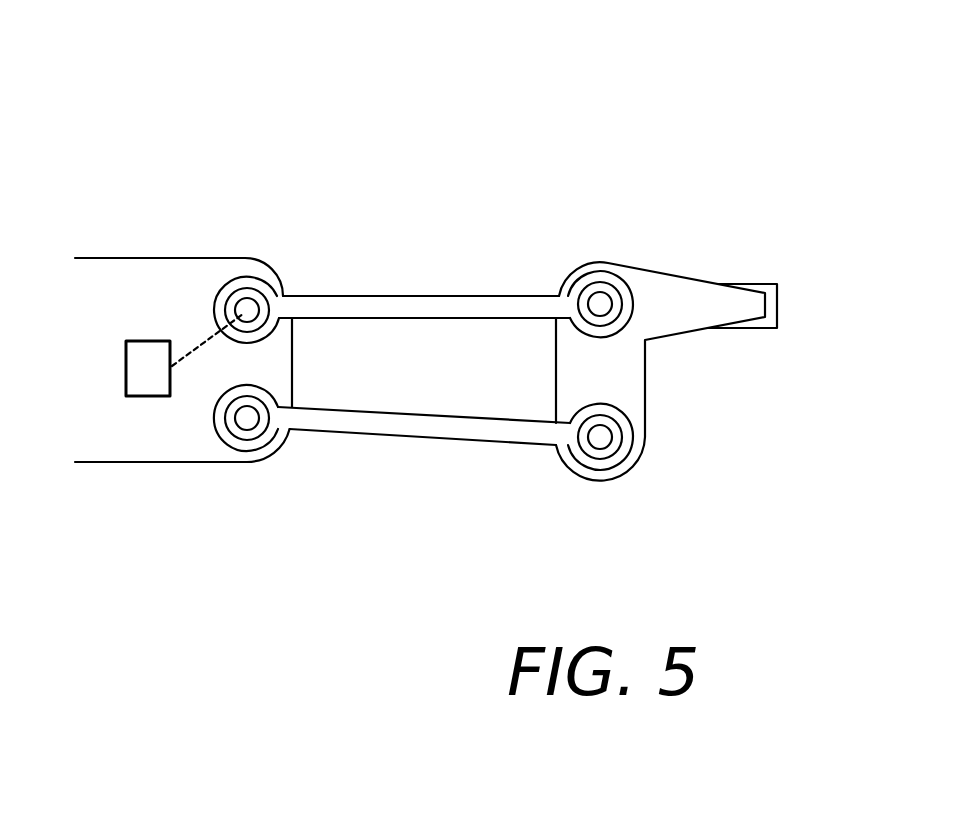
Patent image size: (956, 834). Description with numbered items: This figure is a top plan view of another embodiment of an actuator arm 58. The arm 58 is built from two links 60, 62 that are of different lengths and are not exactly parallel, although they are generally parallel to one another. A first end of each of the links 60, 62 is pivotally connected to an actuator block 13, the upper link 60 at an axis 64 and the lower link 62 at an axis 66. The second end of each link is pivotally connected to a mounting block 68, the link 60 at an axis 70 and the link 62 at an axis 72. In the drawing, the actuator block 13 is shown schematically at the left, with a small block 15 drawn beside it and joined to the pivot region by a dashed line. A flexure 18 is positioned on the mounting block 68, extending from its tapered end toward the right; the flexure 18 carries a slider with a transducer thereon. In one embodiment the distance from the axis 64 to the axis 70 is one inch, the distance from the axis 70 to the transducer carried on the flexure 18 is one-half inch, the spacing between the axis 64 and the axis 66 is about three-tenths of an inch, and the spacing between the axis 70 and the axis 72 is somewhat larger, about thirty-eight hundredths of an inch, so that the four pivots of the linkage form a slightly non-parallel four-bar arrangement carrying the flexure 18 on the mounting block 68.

The actuator arm 58 is at (479, 138).
The actuator block 13 is at (143, 275).
The mounting block 15 is at (134, 370).
The flexure 18 is at (772, 311).
The link 60 is at (432, 304).
The link 62 is at (428, 432).
The axis 64 is at (248, 308).
The axis 66 is at (247, 418).
The mounting block 68 is at (675, 322).
The axis 70 is at (601, 303).
The axis 72 is at (600, 437).